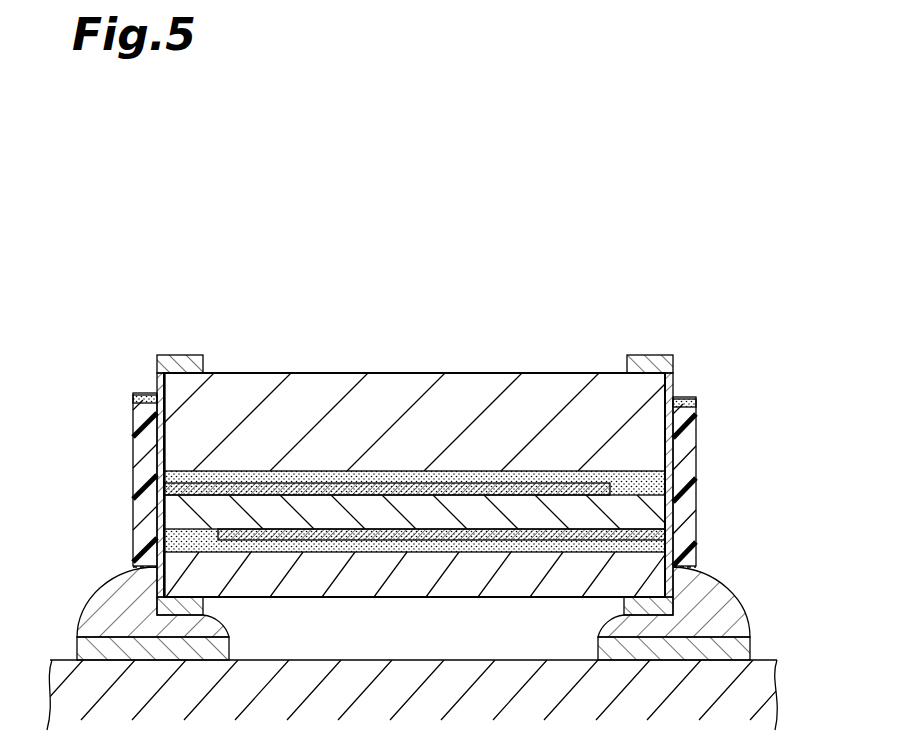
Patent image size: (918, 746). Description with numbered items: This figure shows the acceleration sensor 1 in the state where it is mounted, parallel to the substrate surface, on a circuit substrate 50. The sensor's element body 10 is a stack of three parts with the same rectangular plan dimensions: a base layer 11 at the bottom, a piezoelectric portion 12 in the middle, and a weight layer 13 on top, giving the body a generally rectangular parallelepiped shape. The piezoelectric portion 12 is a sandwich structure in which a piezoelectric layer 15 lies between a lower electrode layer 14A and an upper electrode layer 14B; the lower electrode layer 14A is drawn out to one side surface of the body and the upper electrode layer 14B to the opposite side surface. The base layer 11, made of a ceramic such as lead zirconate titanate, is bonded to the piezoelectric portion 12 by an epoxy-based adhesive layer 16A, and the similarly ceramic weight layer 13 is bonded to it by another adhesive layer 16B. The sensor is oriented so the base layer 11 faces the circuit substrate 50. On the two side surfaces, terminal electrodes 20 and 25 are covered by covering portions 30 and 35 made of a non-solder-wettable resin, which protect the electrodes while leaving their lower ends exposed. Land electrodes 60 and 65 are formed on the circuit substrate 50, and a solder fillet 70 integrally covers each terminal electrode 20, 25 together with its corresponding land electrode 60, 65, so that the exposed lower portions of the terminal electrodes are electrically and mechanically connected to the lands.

The acceleration sensor 1 is at (219, 200).
The element body 10 is at (265, 371).
The base layer 11 is at (543, 590).
The piezoelectric portion 12 is at (677, 517).
The weight layer 13 is at (468, 381).
The lower electrode layer 14A is at (440, 538).
The upper electrode layer 14B is at (315, 495).
The piezoelectric layer 15 is at (382, 513).
The adhesive layer 16A is at (632, 568).
The adhesive layer 16B is at (632, 473).
The terminal electrode 20 is at (660, 351).
The terminal electrode 25 is at (176, 351).
The covering portion 30 is at (697, 424).
The covering portion 35 is at (133, 427).
The circuit substrate 50 is at (766, 686).
The land electrode 60 is at (751, 648).
The land electrode 65 is at (77, 648).
The solder fillet 70 is at (93, 599).